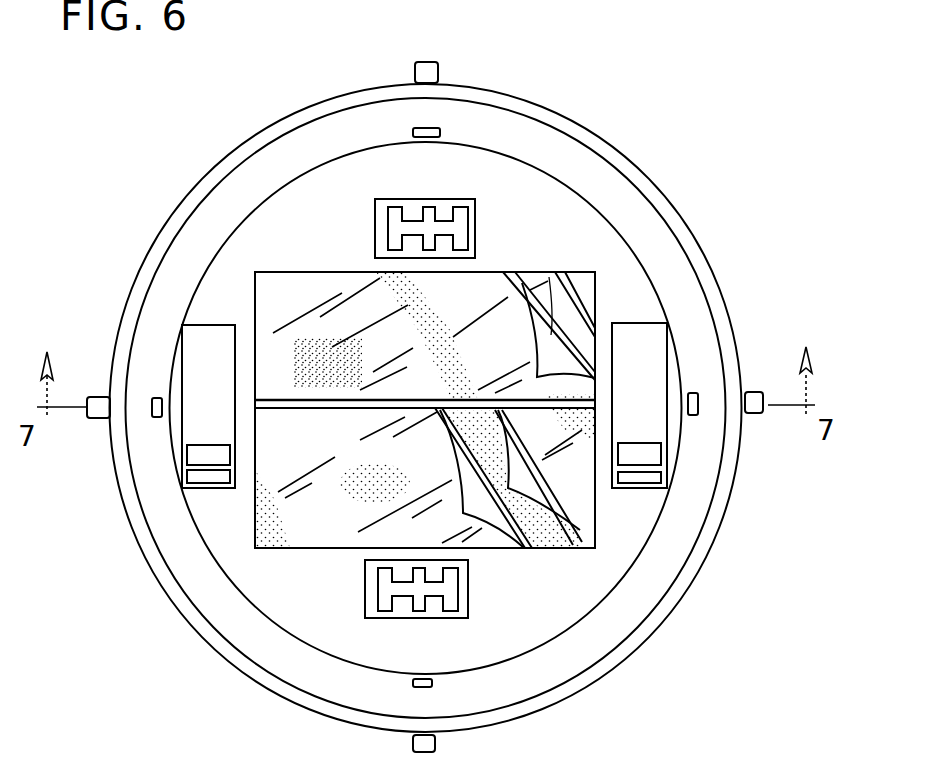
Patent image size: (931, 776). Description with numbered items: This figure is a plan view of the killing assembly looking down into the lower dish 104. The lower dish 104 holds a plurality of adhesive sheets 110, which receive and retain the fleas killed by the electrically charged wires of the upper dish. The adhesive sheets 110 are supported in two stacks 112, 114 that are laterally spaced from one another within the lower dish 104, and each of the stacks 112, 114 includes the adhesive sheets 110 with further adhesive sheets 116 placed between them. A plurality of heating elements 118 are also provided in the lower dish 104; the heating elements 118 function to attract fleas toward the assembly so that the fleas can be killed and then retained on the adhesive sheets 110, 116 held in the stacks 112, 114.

The lower dish 104 is at (710, 253).
The adhesive sheets 110 is at (498, 323).
The stack 112 is at (252, 307).
The stack 114 is at (253, 490).
The adhesive sheets 116 is at (515, 273).
The heating elements 118 is at (443, 206).